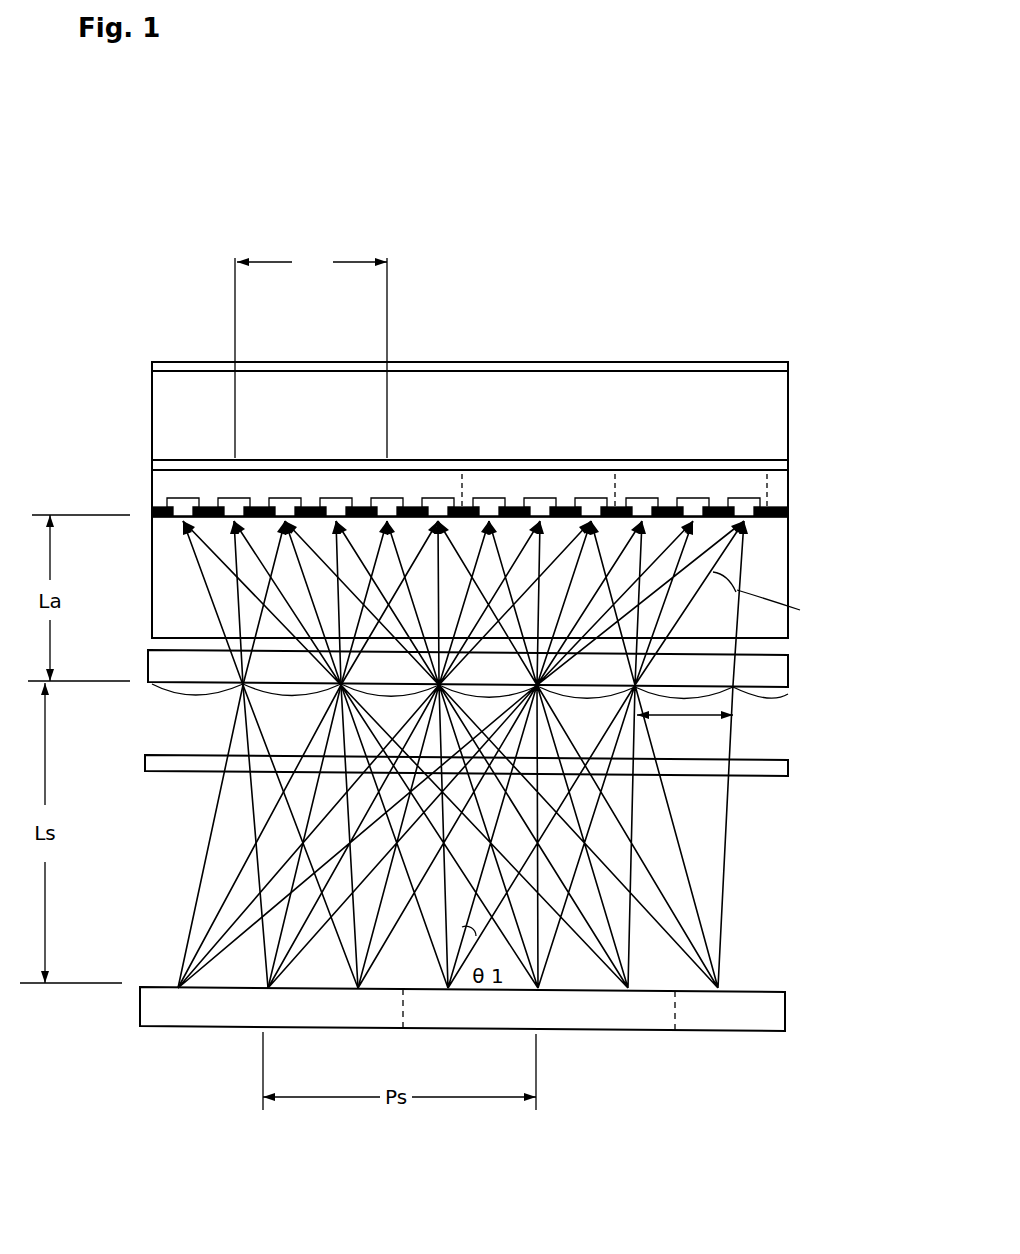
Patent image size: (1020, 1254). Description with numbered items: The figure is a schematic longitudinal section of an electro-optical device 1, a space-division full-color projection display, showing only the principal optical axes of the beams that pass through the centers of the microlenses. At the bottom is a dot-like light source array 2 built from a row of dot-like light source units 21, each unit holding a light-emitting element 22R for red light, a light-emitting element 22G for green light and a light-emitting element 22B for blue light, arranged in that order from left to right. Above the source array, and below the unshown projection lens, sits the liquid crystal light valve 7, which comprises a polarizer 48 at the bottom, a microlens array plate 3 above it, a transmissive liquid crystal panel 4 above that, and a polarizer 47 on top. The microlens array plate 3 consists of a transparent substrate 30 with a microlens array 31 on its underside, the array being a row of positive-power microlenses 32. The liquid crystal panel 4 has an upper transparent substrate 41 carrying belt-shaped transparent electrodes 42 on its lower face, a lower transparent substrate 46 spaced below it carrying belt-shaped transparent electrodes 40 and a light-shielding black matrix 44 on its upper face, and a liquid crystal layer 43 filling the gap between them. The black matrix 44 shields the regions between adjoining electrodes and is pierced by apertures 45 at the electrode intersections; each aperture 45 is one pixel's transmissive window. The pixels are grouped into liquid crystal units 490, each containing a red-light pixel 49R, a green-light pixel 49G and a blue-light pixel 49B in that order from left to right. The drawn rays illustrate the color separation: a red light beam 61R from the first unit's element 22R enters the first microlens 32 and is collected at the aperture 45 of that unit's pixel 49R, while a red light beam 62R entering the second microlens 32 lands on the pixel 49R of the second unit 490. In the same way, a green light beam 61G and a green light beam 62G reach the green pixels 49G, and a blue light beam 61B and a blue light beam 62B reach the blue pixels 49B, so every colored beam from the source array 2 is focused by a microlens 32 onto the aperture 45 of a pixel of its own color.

The electro-optical device 1 is at (745, 306).
The dot-like light source array 2 is at (786, 1013).
The microlens array plate 3 is at (148, 653).
The transmissive liquid crystal panel 4 is at (148, 636).
The liquid crystal light valve 7 is at (808, 549).
The dot-like light source unit 21 is at (205, 1018).
The light-emitting element for emitting red light 22R is at (158, 1030).
The light-emitting element for emitting green light 22G is at (255, 1030).
The light-emitting element for emitting blue light 22B is at (355, 1030).
The transparent substrate 30 is at (150, 672).
The microlens array 31 is at (760, 698).
The microlens 32 is at (757, 687).
The belt-shaped transparent electrode 40 is at (268, 497).
The transparent substrate 41 is at (770, 432).
The belt-shaped transparent electrode 42 is at (790, 463).
The liquid crystal layer 43 is at (790, 496).
The black matrix 44 is at (283, 470).
The aperture 45 is at (305, 505).
The transparent substrate 46 is at (770, 581).
The polarizer 47 is at (792, 371).
The polarizer 48 is at (778, 770).
The red-light pixel 49R is at (290, 505).
The green-light pixel 49G is at (245, 500).
The blue-light pixel 49B is at (190, 505).
The liquid crystal unit 490 is at (215, 500).
The red light beam 61R is at (212, 820).
The green light beam 61G is at (248, 797).
The blue light beam 61B is at (343, 950).
The red light beam 62R is at (248, 855).
The green light beam 62G is at (325, 745).
The blue light beam 62B is at (357, 946).